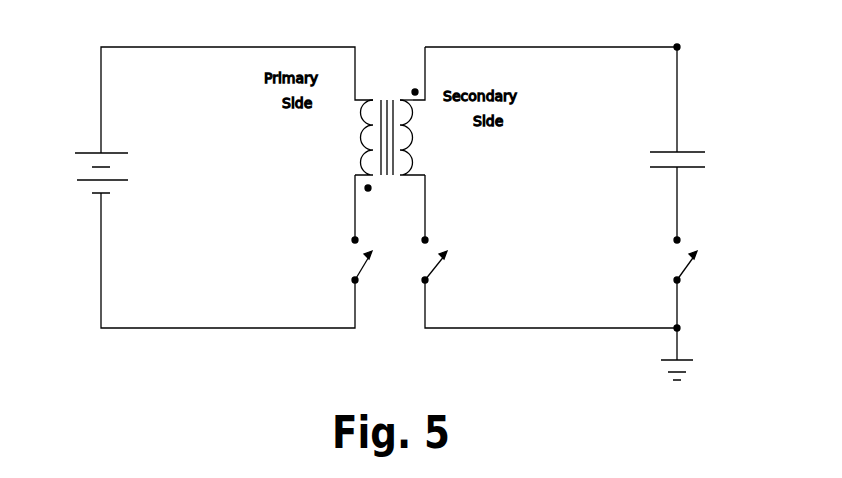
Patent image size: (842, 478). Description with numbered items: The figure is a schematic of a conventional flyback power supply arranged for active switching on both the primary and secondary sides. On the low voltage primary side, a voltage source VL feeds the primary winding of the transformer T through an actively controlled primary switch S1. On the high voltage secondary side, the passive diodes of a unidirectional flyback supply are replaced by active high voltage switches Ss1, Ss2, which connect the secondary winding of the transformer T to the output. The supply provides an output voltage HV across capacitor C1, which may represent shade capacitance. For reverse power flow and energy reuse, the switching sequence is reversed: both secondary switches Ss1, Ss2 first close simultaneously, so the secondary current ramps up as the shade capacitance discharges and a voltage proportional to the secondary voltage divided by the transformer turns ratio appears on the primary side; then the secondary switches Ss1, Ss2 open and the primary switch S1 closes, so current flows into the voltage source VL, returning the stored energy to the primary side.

The voltage source VL is at (83, 173).
The primary switch S1 is at (343, 260).
The active high voltage switch Ss1 is at (449, 260).
The active high voltage switch Ss2 is at (661, 260).
The capacitor C1 is at (693, 160).
The output voltage HV is at (697, 47).
The transformer T is at (390, 140).